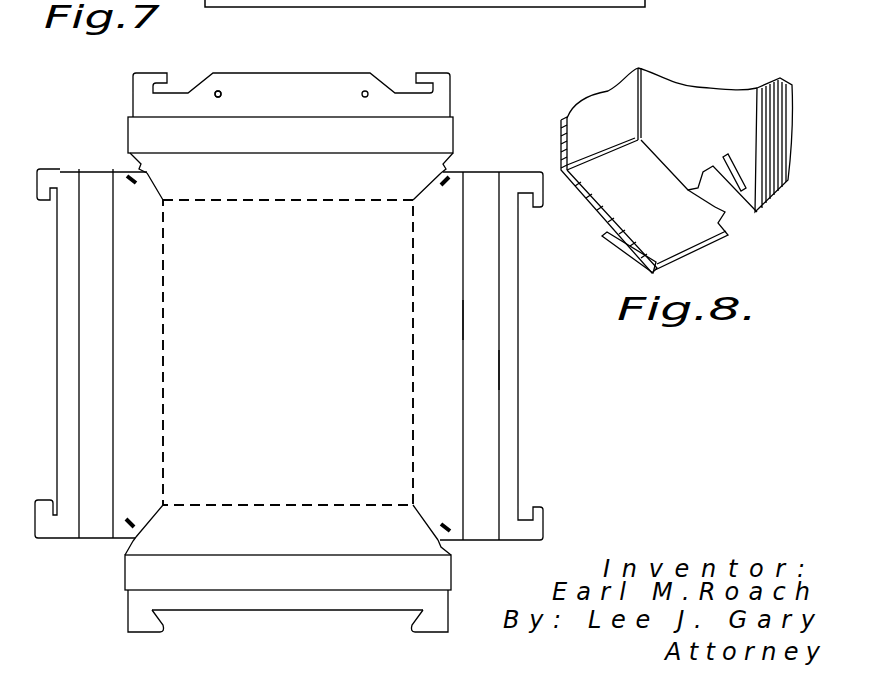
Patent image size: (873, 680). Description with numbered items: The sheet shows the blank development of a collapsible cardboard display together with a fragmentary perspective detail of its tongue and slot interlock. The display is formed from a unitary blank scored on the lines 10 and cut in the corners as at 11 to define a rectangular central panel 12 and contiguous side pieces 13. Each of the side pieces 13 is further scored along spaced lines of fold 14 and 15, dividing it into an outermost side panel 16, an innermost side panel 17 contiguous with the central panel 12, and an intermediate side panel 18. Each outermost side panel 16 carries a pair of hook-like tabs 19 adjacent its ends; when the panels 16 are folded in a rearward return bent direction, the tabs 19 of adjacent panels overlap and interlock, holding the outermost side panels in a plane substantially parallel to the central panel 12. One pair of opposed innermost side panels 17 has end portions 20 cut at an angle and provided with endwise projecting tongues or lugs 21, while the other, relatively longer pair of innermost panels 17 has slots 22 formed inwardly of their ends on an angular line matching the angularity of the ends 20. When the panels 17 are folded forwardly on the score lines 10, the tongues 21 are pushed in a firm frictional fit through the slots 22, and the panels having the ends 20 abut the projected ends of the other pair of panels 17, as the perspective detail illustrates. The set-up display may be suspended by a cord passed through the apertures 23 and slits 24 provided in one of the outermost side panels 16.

In FIG. 7, the score lines 10 is at (333, 200).
In FIG. 7, the corner cuts 11 is at (455, 156).
In FIG. 7, the central panel 12 is at (316, 316).
In FIG. 8, the central panel 12 is at (608, 91).
In FIG. 7, the side pieces 13 is at (298, 68).
In FIG. 7, the line of fold 14 is at (465, 313).
In FIG. 7, the line of fold 15 is at (498, 376).
In FIG. 7, the outermost side panel 16 is at (345, 78).
In FIG. 7, the innermost side panel 17 is at (268, 200).
In FIG. 8, the innermost side panel 17 is at (700, 97).
In FIG. 7, the intermediate side panel 18 is at (440, 135).
In FIG. 8, the intermediate side panel 18 is at (772, 80).
In FIG. 7, the hook-like tabs 19 is at (158, 82).
In FIG. 7, the end portions 20 is at (160, 186).
In FIG. 8, the end portions 20 is at (678, 178).
In FIG. 7, the tongues or lugs 21 is at (147, 165).
In FIG. 8, the tongues or lugs 21 is at (723, 208).
In FIG. 7, the slots 22 is at (133, 190).
In FIG. 8, the slots 22 is at (740, 160).
In FIG. 7, the apertures 23 is at (222, 94).
In FIG. 7, the slits 24 is at (222, 92).